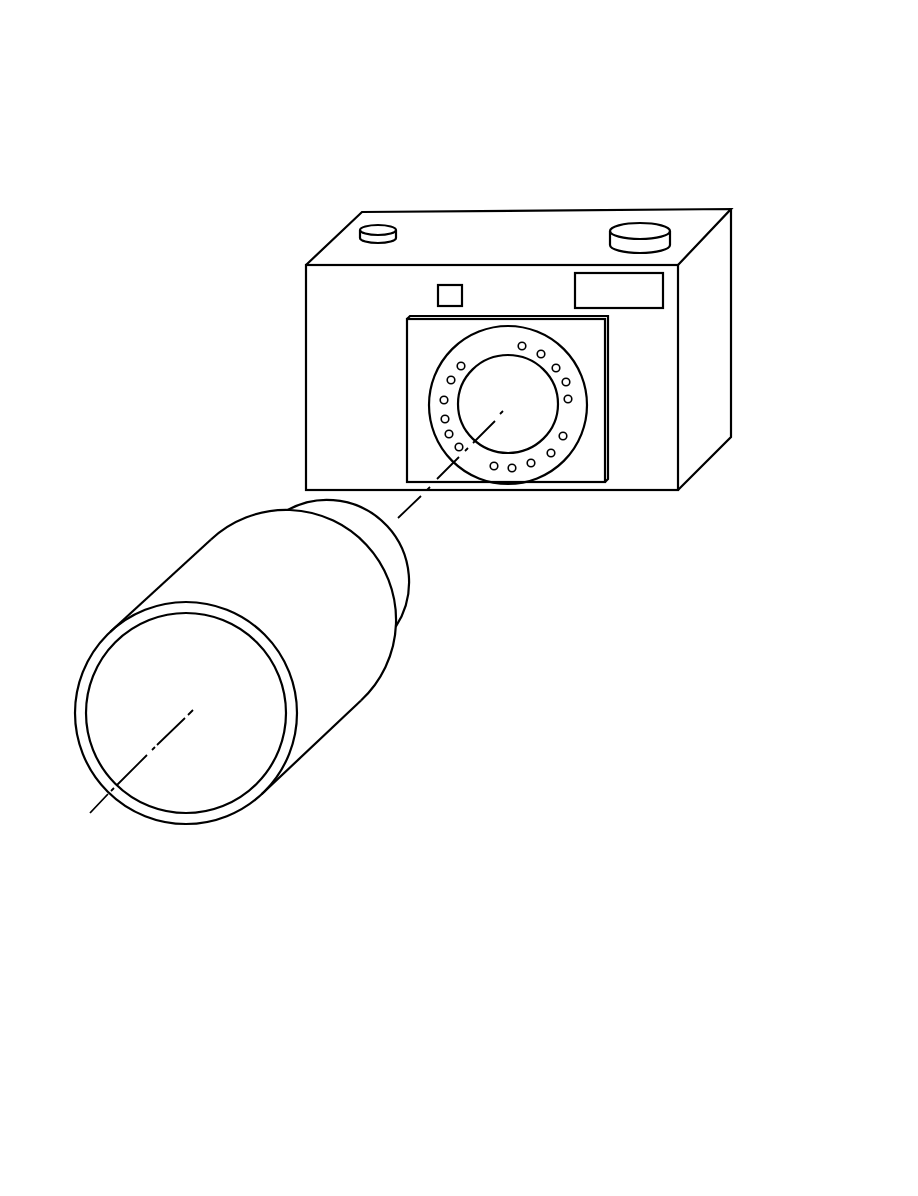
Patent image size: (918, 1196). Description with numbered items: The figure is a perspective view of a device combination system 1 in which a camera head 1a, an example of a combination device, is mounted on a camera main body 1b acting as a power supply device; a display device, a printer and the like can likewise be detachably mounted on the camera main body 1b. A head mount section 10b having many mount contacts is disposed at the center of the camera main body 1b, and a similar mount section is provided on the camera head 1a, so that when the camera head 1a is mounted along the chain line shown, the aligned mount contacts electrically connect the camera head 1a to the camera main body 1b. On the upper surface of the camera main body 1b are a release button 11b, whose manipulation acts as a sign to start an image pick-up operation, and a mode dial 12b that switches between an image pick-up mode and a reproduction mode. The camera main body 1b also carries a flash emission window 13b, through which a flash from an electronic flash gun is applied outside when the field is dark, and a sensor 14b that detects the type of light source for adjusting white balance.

The device combination system 1 is at (761, 84).
The camera head 1a is at (327, 705).
The camera main body 1b is at (715, 392).
The head mount section 10b is at (478, 459).
The release button 11b is at (379, 225).
The mode dial 12b is at (639, 223).
The flash emission window 13b is at (625, 306).
The sensor 14b is at (438, 296).